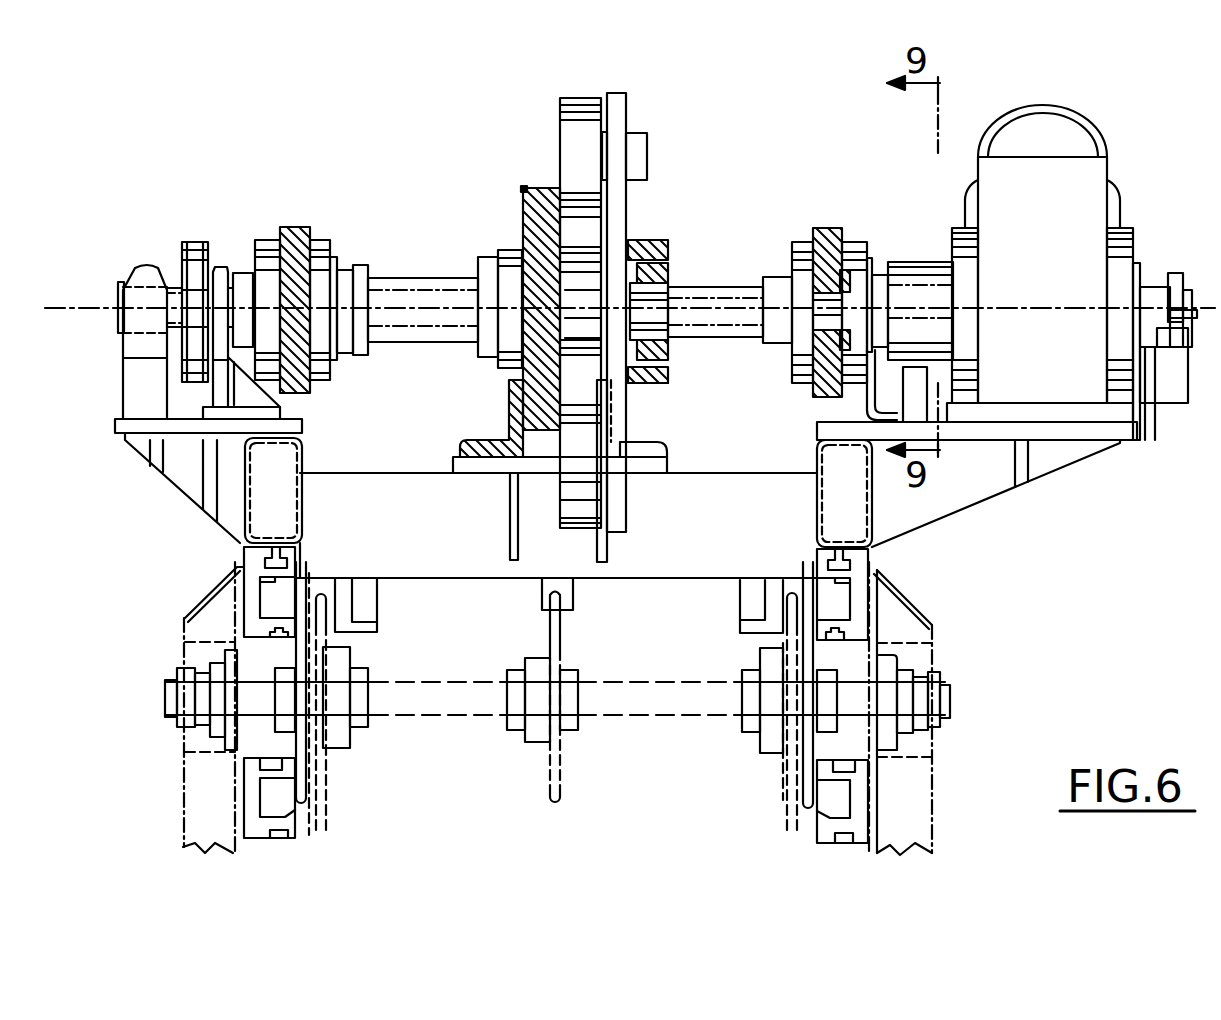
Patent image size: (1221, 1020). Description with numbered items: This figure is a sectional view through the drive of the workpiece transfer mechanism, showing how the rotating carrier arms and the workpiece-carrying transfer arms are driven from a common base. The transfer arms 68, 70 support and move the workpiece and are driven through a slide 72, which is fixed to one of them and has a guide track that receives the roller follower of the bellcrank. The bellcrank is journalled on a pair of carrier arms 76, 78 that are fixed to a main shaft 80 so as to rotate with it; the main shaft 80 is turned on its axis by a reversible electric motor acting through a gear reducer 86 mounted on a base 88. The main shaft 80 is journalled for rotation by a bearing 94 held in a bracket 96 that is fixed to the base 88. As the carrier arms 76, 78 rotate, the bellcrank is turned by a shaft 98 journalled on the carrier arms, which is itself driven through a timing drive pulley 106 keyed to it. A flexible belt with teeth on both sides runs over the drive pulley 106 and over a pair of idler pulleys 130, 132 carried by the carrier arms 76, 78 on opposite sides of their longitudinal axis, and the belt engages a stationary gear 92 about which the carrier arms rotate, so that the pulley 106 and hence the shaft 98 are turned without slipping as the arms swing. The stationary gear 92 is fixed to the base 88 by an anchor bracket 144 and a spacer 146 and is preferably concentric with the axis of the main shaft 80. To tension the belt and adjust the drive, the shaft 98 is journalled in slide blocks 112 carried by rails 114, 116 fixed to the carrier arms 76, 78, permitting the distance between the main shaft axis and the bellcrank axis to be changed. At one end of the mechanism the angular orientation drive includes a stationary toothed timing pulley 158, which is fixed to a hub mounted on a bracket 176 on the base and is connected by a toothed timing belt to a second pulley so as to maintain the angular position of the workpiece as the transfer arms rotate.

The transfer arm 68 is at (291, 228).
The transfer arm 70 is at (830, 228).
The slide 72 is at (322, 242).
The carrier arm 76 is at (505, 370).
The carrier arm 78 is at (620, 163).
The main shaft 80 is at (405, 290).
The gear reducer 86 is at (1092, 188).
The base 88 is at (1062, 460).
The stationary gear 92 is at (521, 189).
The bearing 94 is at (118, 287).
The bracket 96 is at (148, 268).
The shaft 98 is at (718, 337).
The timing drive pulley 106 is at (563, 270).
The slide block 112 is at (668, 275).
The rail 114 is at (652, 240).
The rail 116 is at (665, 384).
The idler pulley 130 is at (592, 97).
The idler pulley 132 is at (585, 501).
The anchor bracket 144 is at (460, 450).
The spacer 146 is at (660, 466).
The timing pulley 158 is at (206, 244).
The bracket 176 is at (283, 412).